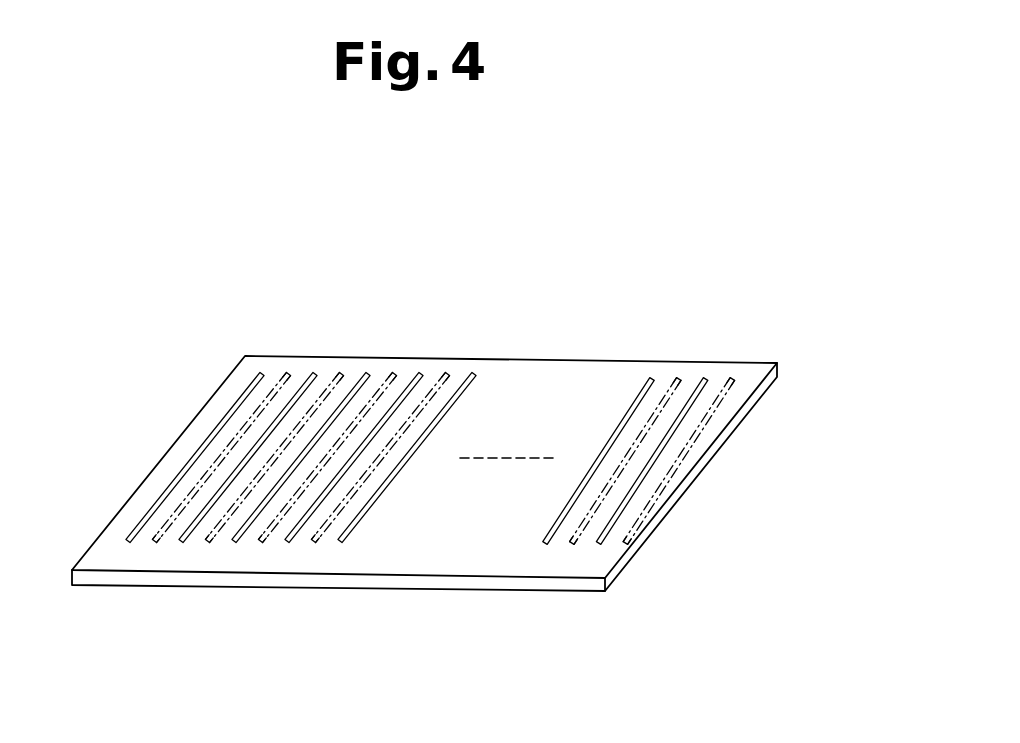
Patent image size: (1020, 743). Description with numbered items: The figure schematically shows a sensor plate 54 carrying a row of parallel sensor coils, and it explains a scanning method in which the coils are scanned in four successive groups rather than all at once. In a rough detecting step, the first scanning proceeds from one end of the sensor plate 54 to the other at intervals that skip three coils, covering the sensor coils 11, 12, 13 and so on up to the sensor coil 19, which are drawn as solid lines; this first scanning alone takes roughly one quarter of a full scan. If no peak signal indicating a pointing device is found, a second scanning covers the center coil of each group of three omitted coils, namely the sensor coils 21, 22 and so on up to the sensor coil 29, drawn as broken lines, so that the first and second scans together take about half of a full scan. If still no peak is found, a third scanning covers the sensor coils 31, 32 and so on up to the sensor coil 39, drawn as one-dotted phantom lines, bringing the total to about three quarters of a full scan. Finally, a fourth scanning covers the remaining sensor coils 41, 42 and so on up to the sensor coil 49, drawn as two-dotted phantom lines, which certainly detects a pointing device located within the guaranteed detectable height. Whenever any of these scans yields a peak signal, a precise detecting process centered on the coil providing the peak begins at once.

The sensor plate 54 is at (768, 252).
The sensor coil 11 is at (263, 374).
The sensor coil 12 is at (367, 374).
The sensor coil 13 is at (483, 374).
The sensor coil 21 is at (318, 374).
The sensor coil 22 is at (423, 374).
The sensor coil 31 is at (292, 374).
The sensor coil 32 is at (395, 374).
The sensor coil 41 is at (345, 374).
The sensor coil 42 is at (460, 374).
The sensor coil 19 is at (653, 379).
The sensor coil 29 is at (708, 379).
The sensor coil 39 is at (682, 379).
The sensor coil 49 is at (736, 379).